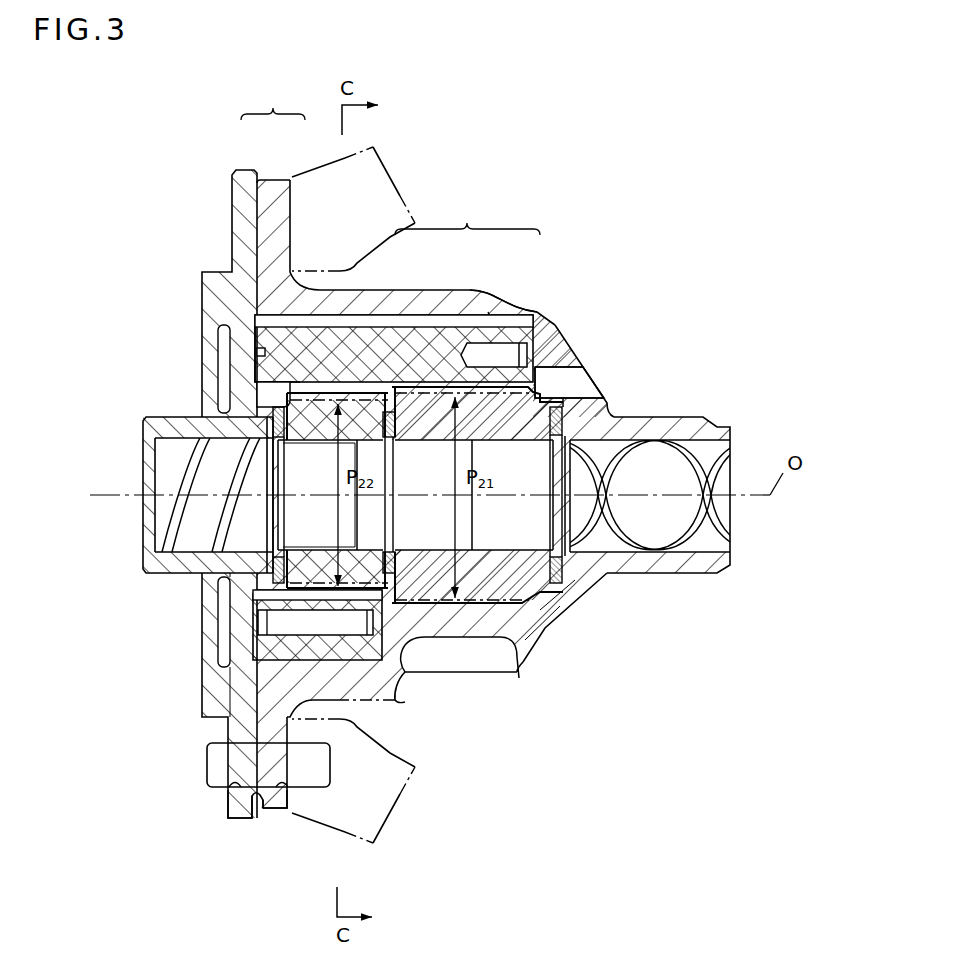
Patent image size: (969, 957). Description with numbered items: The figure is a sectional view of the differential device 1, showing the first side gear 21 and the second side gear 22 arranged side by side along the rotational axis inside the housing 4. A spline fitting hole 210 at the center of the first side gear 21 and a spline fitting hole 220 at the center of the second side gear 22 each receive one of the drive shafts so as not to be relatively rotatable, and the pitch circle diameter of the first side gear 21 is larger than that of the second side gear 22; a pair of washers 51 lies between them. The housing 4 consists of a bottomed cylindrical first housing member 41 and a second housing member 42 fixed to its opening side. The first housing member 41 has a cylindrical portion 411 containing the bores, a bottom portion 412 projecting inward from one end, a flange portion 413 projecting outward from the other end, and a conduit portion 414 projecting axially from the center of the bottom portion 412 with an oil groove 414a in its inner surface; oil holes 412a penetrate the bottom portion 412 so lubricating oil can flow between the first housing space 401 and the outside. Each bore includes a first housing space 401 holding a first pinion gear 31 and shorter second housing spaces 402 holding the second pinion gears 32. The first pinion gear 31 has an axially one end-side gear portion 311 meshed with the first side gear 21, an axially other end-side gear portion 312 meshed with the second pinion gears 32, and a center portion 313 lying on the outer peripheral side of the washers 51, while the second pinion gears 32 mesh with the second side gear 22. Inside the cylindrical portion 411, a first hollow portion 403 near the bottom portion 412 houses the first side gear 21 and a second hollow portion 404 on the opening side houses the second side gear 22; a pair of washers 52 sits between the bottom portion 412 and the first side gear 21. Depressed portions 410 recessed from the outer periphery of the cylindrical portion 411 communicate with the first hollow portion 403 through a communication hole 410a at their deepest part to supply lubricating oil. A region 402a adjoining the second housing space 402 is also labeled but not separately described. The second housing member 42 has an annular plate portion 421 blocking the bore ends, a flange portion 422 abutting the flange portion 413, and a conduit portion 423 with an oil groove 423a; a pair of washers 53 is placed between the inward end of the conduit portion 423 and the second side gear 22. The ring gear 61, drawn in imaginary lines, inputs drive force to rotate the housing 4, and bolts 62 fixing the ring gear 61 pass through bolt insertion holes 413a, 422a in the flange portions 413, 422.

The differential device 1 is at (577, 215).
The housing 4 is at (253, 454).
The first housing member 41 is at (280, 180).
The second housing member 42 is at (248, 170).
The ring gear 61 is at (392, 172).
The bolts 62 is at (207, 783).
The first pinion gear 31 is at (397, 289).
The axially one end-side gear portion 311 is at (468, 328).
The axially other end-side gear portion 312 is at (393, 323).
The center portion 313 is at (423, 323).
The second pinion gear 32 is at (256, 662).
The depressed portion 410 is at (467, 675).
The communication hole 410a is at (490, 312).
The cylindrical portion 411 is at (420, 623).
The bottom portion 412 is at (587, 575).
The oil holes 412a is at (593, 372).
The conduit portion 414 is at (654, 519).
The oil groove 414a is at (685, 462).
The spline fitting hole 210 is at (607, 413).
The first housing space 401 is at (257, 352).
The second hollow portion 404 is at (250, 390).
The second housing space 402 is at (248, 622).
The housing lower surface 402a is at (402, 703).
The first hollow portion 403 is at (533, 583).
The first side gear 21 is at (540, 600).
The second side gear 22 is at (297, 430).
The spline fitting hole 220 is at (305, 472).
The conduit portion 423 is at (169, 518).
The oil groove 423a is at (188, 467).
The annular plate portion 421 is at (242, 638).
The flange portion 422 is at (243, 803).
The bolt insertion hole 422a is at (222, 785).
The flange portion 413 is at (278, 803).
The bolt insertion hole 413a is at (288, 787).
The washers 51 is at (388, 435).
The washers 52 is at (552, 557).
The washers 53 is at (288, 560).